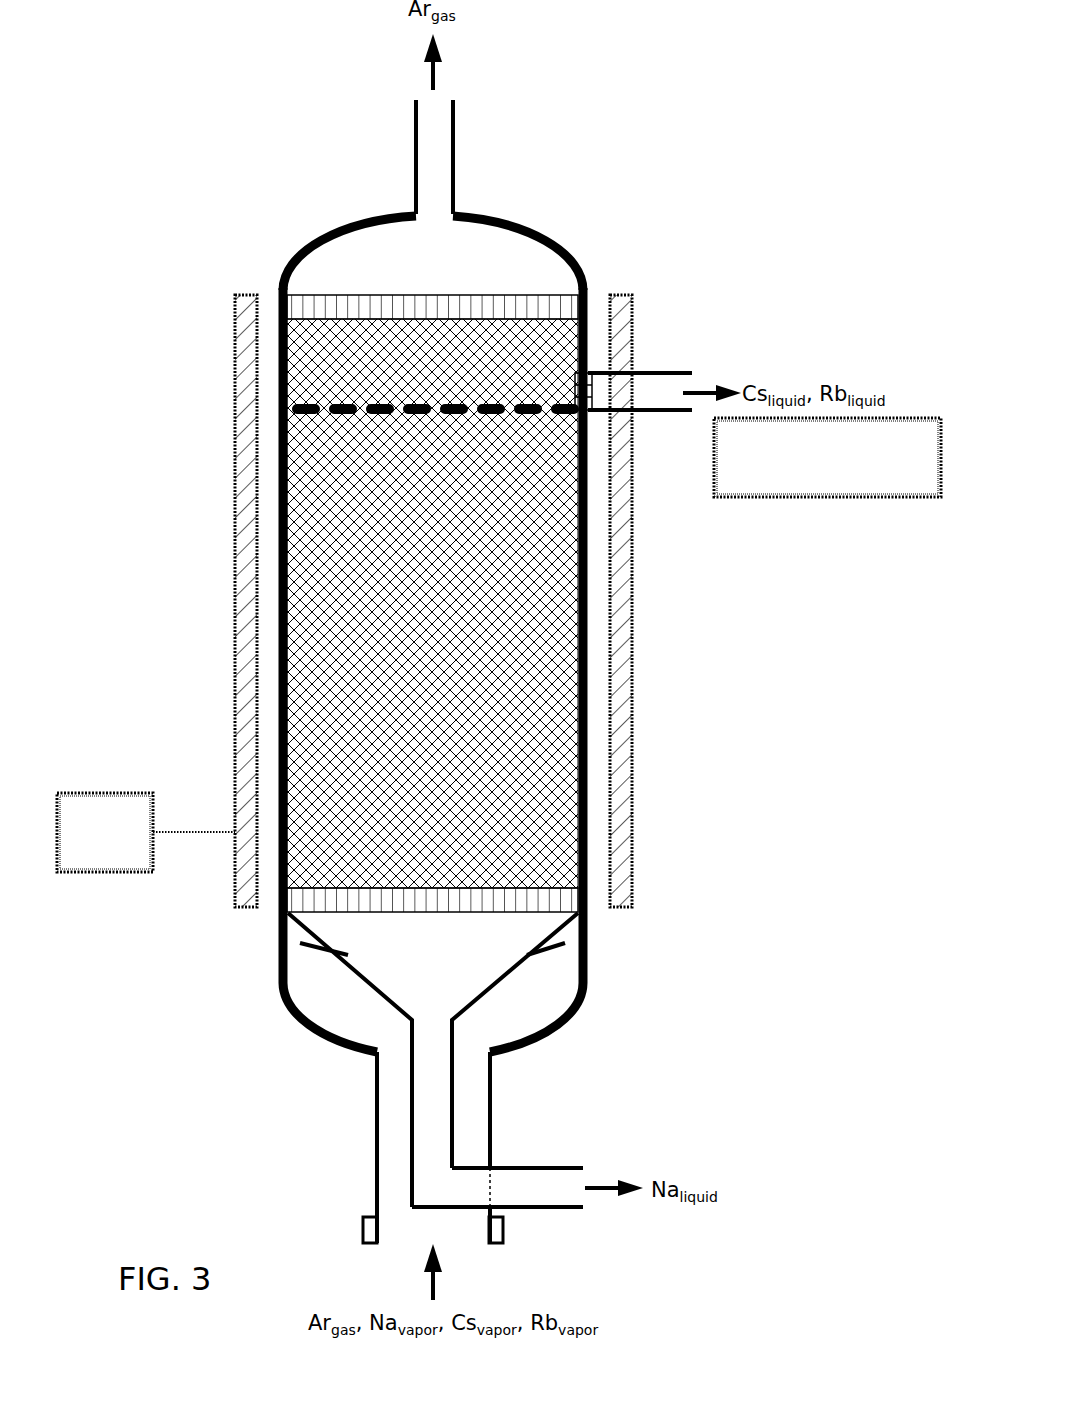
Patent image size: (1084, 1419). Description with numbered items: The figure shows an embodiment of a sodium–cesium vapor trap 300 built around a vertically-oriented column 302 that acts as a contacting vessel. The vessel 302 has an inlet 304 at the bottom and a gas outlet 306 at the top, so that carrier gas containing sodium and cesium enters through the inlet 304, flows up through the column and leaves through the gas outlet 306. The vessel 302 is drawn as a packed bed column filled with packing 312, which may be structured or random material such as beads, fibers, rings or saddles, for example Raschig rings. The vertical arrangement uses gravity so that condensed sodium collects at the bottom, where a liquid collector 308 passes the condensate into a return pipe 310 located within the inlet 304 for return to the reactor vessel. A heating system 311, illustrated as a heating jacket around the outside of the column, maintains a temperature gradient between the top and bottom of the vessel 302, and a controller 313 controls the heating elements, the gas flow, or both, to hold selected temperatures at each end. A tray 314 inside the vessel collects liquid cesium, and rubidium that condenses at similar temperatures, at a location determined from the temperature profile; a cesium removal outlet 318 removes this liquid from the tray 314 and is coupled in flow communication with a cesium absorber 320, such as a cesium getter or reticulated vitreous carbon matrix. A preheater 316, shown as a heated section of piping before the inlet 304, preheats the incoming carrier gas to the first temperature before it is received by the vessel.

The vapor trap 300 is at (222, 152).
The column 302 is at (572, 262).
The inlet 304 is at (377, 1077).
The gas outlet 306 is at (453, 155).
The liquid collector 308 is at (527, 973).
The return pipe 310 is at (545, 1168).
The heating system 311 is at (235, 558).
The packing 312 is at (470, 766).
The controller 313 is at (146, 832).
The tray 314 is at (530, 422).
The preheater 316 is at (363, 1217).
The cesium removal outlet 318 is at (658, 373).
The cesium absorber 320 is at (827, 457).